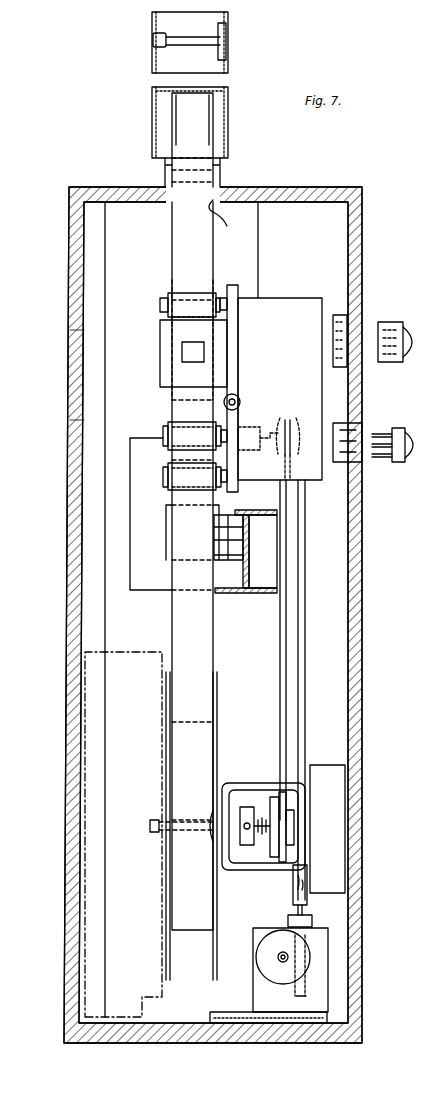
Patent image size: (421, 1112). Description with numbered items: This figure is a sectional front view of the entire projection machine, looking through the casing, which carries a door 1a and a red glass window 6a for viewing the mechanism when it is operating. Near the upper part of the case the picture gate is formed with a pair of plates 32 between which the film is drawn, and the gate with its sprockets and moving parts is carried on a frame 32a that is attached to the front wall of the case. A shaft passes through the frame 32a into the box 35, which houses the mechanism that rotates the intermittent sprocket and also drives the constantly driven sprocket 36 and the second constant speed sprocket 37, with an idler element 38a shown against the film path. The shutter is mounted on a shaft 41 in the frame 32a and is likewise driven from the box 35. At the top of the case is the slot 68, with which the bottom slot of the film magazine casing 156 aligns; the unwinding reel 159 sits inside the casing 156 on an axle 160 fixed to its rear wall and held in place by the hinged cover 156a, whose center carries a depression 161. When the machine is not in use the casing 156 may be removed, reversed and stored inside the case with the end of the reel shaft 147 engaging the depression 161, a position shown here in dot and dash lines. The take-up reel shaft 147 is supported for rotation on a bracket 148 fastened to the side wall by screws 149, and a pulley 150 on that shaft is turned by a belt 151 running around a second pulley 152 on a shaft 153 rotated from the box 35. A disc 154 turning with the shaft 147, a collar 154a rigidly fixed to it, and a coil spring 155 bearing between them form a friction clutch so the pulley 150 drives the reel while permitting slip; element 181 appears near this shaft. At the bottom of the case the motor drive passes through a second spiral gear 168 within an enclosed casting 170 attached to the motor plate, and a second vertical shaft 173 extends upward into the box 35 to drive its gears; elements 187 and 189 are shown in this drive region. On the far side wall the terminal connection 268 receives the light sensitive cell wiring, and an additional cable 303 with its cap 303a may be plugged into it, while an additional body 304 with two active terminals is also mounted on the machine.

The door 1a is at (68, 558).
The window 6a is at (70, 372).
The plates 32 is at (160, 339).
The frame 32a is at (238, 325).
The box 35 is at (274, 310).
The constantly driven sprocket 36 is at (170, 290).
The second constant speed sprocket 37 is at (164, 432).
The nut 38a is at (160, 306).
The shaft 41 is at (238, 401).
The slot 68 is at (226, 220).
The shaft 147 is at (150, 828).
The bracket 148 is at (166, 745).
The screws 149 is at (228, 785).
The pulley 150 is at (287, 816).
The belt 151 is at (280, 655).
The pulley 152 is at (298, 418).
The shaft 153 is at (270, 425).
The disc 154 is at (272, 856).
The collar 154a is at (252, 846).
The coil spring 155 is at (256, 816).
The casing 156 is at (225, 55).
The cover 156a is at (160, 688).
The unwinding reel 159 is at (172, 124).
The axle 160 is at (203, 40).
The depression 161 is at (152, 43).
The second spiral gear 168 is at (300, 956).
The enclosed casting 170 is at (290, 1024).
The second vertical shaft 173 is at (300, 629).
The pin 181 is at (150, 833).
The drive wheel 187 is at (264, 958).
The drive block 189 is at (292, 907).
The terminal connection 268 is at (362, 464).
The additional cable 303 is at (395, 342).
The cap 303a is at (396, 428).
The additional body 304 is at (336, 316).